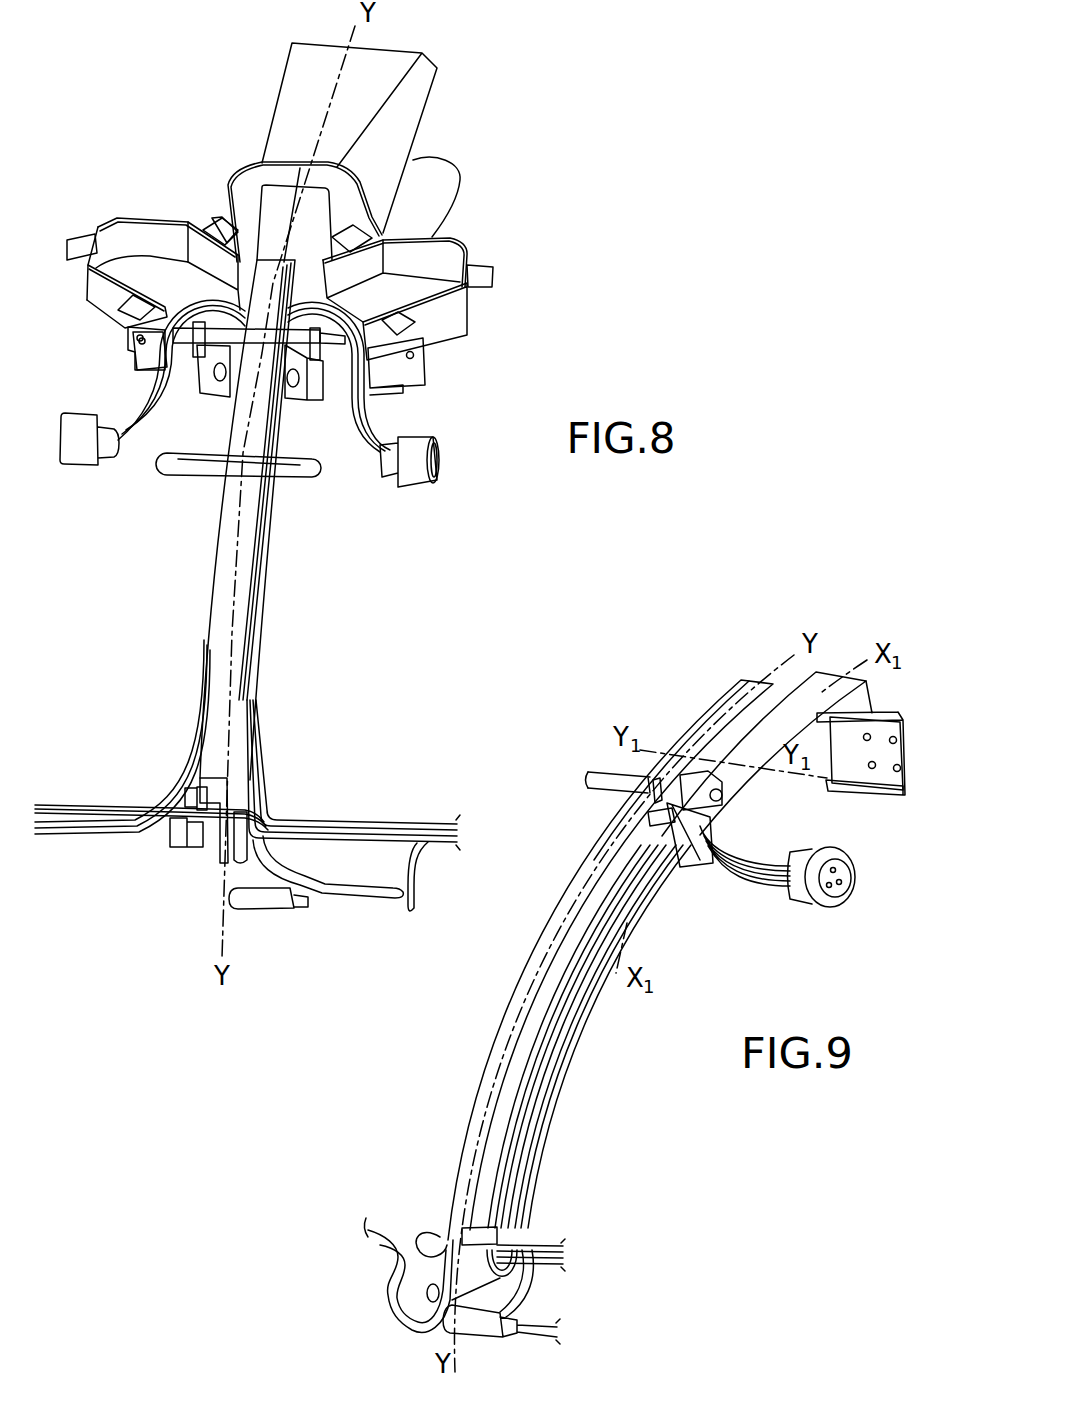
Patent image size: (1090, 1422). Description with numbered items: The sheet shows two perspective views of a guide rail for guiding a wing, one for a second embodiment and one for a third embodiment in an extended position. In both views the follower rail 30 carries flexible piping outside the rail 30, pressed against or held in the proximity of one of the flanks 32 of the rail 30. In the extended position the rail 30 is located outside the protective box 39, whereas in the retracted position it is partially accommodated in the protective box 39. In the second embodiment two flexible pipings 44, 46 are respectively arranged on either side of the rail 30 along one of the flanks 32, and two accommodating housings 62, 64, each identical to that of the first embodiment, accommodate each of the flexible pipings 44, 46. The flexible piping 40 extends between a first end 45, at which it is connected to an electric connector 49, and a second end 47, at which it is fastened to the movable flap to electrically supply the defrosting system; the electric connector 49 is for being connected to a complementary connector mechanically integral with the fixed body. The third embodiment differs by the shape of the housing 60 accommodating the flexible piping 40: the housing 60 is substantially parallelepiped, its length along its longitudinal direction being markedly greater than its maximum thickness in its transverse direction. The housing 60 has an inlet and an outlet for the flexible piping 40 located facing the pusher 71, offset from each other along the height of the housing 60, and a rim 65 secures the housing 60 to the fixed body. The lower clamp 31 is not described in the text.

In FIG. 8, the follower rail 30 is at (253, 685).
In FIG. 9, the follower rail 30 is at (472, 1165).
In FIG. 9, the lower clamp 31 is at (408, 1287).
In FIG. 8, the flank 32 is at (223, 833).
In FIG. 8, the protective box 39 is at (300, 100).
In FIG. 9, the flexible piping 40 is at (563, 1022).
In FIG. 8, the flexible piping 44 is at (267, 573).
In FIG. 8, the first end 45 is at (383, 467).
In FIG. 8, the flexible piping 46 is at (203, 632).
In FIG. 8, the second end 47 is at (260, 747).
In FIG. 8, the electric connector 49 is at (77, 470).
In FIG. 9, the housing 60 is at (801, 792).
In FIG. 8, the accommodating housing 62 is at (498, 312).
In FIG. 8, the accommodating housing 64 is at (97, 216).
In FIG. 9, the rim 65 is at (893, 757).
In FIG. 9, the pusher 71 is at (640, 833).